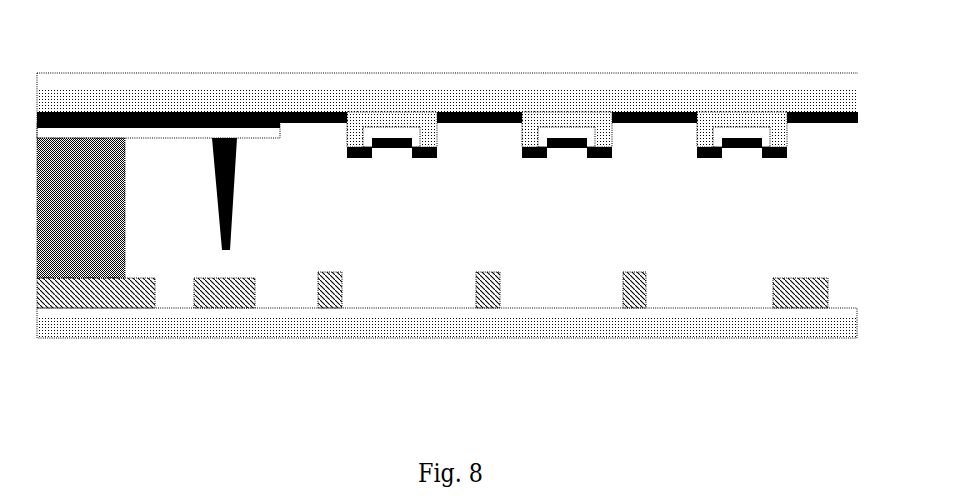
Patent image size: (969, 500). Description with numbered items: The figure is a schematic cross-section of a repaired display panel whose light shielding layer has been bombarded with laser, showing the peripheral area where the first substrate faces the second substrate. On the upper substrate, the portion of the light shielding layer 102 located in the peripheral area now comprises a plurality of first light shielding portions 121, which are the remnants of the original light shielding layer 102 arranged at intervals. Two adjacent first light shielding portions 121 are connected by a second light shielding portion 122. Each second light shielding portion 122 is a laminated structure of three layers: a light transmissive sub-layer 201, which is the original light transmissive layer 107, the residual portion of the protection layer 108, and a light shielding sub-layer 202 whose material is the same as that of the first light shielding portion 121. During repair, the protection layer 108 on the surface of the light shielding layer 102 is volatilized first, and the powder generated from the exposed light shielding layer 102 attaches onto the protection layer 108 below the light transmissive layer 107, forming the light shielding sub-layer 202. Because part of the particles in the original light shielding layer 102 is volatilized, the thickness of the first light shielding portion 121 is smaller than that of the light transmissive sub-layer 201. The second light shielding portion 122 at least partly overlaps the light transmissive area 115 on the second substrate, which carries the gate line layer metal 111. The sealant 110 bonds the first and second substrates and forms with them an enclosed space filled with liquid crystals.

The light shielding layer 102 is at (297, 115).
The first light shielding portion 121 is at (167, 79).
The second light shielding portion 122 is at (363, 106).
The light transmissive layer 107 is at (587, 89).
The light transmissive sub-layer 201 is at (378, 117).
The protection layer 108 is at (360, 145).
The light shielding sub-layer 202 is at (428, 155).
The sealant 110 is at (80, 245).
The gate line layer metal 111 is at (223, 298).
The light transmissive area 115 is at (405, 308).